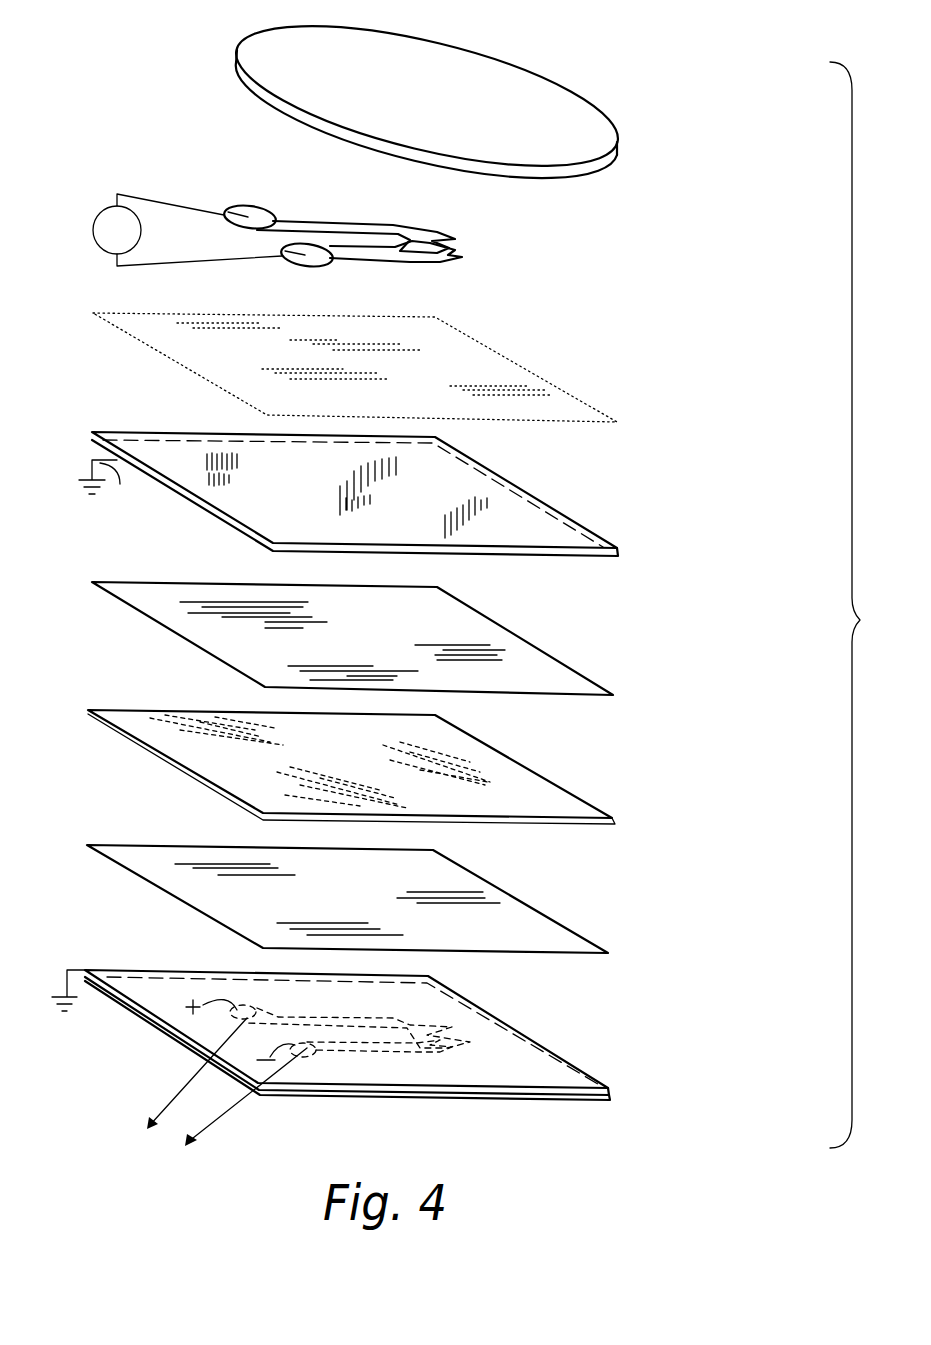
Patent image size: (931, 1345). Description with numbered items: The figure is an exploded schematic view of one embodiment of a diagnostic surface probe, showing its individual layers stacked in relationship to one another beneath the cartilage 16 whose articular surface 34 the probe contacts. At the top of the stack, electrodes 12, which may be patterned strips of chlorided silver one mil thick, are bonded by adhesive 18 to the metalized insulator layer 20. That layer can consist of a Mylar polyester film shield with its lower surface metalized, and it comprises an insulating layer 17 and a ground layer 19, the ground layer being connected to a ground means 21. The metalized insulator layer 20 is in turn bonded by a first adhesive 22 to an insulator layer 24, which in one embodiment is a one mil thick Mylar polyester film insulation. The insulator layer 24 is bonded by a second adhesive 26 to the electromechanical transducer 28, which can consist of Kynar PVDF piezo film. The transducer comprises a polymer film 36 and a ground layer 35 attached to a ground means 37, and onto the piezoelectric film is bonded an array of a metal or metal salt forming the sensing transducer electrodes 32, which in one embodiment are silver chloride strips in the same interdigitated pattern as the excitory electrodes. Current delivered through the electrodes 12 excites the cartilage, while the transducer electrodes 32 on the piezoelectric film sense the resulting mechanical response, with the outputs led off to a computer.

The electrodes 12 is at (458, 243).
The cartilage 16 is at (459, 97).
The insulating layer 17 is at (618, 550).
The adhesive 18 is at (507, 358).
The ground layer 19 is at (548, 557).
The metalized insulator layer 20 is at (463, 524).
The ground means 21 is at (113, 488).
The first adhesive 22 is at (577, 673).
The insulator layer 24 is at (532, 772).
The second adhesive 26 is at (555, 923).
The electromechanical transducer 28 is at (436, 1045).
The transducer electrodes 32 is at (423, 1050).
The articular surface 34 is at (296, 115).
The ground layer 35 is at (605, 1087).
The polymer film 36 is at (607, 1099).
The ground means 37 is at (67, 970).